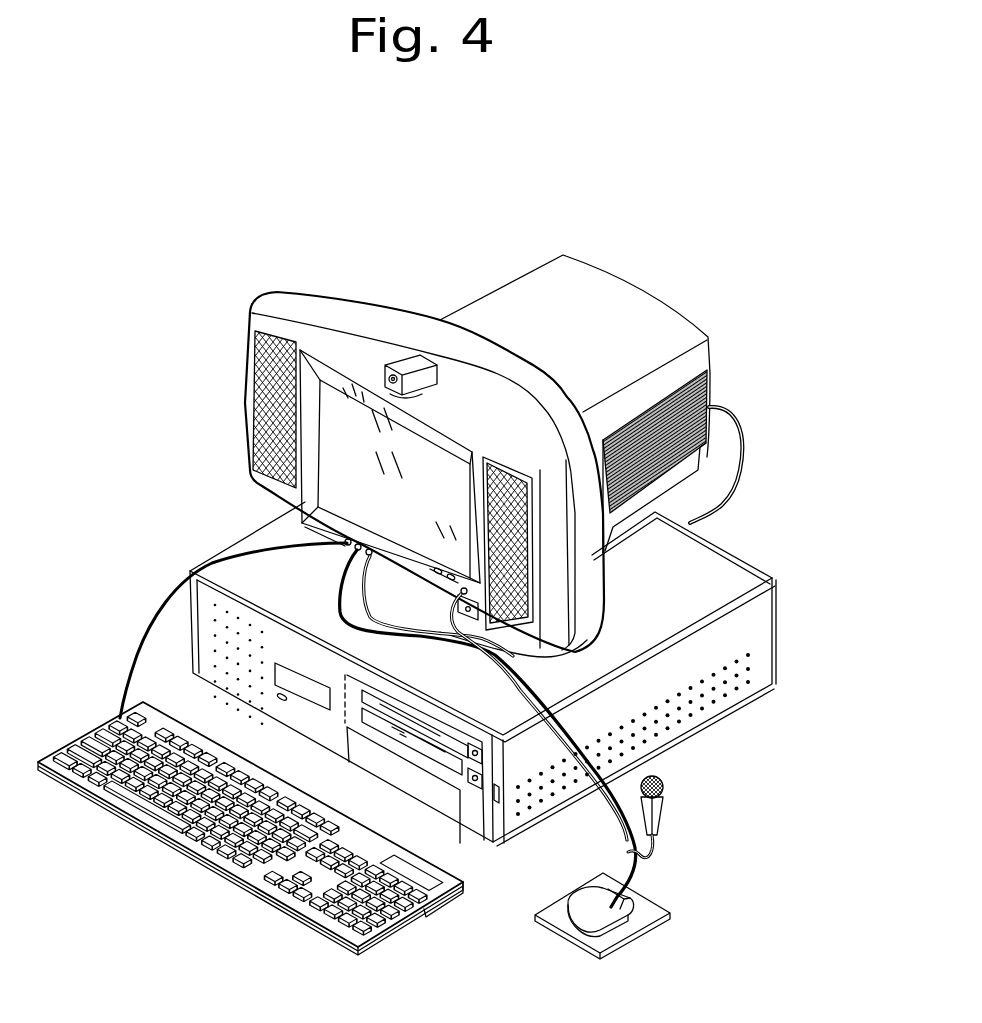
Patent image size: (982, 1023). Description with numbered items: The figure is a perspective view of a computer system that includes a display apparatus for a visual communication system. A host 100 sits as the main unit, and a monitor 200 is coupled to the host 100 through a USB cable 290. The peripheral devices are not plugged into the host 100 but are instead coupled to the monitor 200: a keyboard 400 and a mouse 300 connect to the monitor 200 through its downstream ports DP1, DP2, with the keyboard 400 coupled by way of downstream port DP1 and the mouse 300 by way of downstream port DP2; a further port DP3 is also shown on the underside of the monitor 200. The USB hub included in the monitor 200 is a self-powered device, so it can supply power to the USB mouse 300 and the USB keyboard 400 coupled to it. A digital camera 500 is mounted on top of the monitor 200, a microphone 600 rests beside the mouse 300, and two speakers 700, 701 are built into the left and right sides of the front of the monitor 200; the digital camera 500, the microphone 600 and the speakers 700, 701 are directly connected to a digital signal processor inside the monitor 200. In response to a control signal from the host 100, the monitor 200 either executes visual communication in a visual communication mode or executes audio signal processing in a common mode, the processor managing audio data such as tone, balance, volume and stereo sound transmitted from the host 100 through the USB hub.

The host 100 is at (730, 570).
The monitor 200 is at (496, 449).
The USB cable 290 is at (744, 422).
The mouse 300 is at (612, 916).
The keyboard 400 is at (390, 917).
The digital camera 500 is at (410, 358).
The microphone 600 is at (660, 808).
The speaker 700 is at (264, 390).
The speaker 701 is at (528, 567).
The downstream port DP1 is at (347, 544).
The downstream port DP2 is at (353, 551).
The third connection port DP3 is at (371, 557).